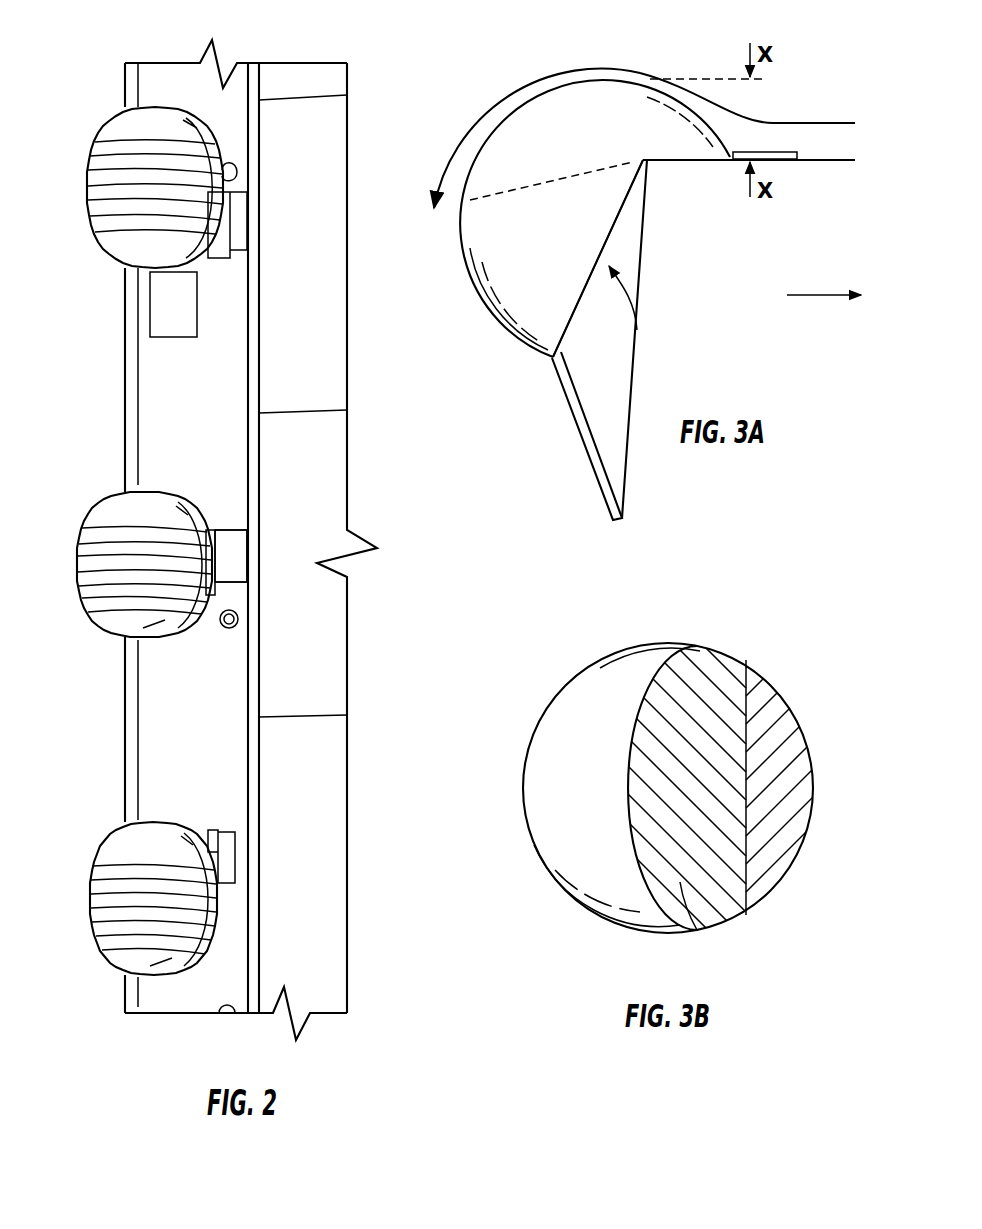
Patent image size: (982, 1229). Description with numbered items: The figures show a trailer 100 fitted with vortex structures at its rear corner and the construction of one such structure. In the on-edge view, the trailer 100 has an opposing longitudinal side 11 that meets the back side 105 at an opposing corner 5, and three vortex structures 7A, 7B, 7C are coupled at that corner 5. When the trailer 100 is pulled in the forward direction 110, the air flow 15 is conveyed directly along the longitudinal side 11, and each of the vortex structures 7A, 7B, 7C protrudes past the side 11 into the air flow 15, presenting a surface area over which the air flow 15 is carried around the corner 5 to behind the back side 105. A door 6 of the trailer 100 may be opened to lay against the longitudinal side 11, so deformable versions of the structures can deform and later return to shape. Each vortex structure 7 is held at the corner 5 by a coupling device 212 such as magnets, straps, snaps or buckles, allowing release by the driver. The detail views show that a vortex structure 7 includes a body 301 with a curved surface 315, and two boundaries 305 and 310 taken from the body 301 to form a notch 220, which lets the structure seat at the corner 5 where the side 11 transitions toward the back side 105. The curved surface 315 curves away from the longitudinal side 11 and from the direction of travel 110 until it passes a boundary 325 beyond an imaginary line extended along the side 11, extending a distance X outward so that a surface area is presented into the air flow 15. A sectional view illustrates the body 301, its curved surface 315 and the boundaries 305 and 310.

In FIG. 2, the trailer 100 is at (128, 27).
In FIG. 2, the opposing corner 5 is at (122, 78).
In FIG. 2, the door 6 is at (307, 656).
In FIG. 2, the vortex structure 7A is at (87, 180).
In FIG. 2, the vortex structure 7B is at (87, 520).
In FIG. 2, the vortex structure 7C is at (87, 890).
In FIG. 2, the air flow 15 is at (173, 405).
In FIG. 3A, the air flow 15 is at (558, 70).
In FIG. 2, the coupling device 212 is at (232, 560).
In FIG. 3A, the coupling device 212 is at (595, 463).
In FIG. 3A, the opposing longitudinal side 11 is at (817, 157).
In FIG. 3A, the vortex structure 7 is at (603, 145).
In FIG. 3A, the body 301 is at (549, 272).
In FIG. 3A, the boundary 305 is at (574, 317).
In FIG. 3B, the boundary 305 is at (723, 895).
In FIG. 3A, the boundary 310 is at (709, 163).
In FIG. 3B, the boundary 310 is at (780, 730).
In FIG. 3A, the curved surface 315 is at (487, 143).
In FIG. 3B, the curved surface 315 is at (610, 652).
In FIG. 3A, the boundary 325 is at (558, 182).
In FIG. 3A, the back side 105 is at (643, 272).
In FIG. 3A, the notch 220 is at (637, 330).
In FIG. 3A, the forward direction 110 is at (810, 297).